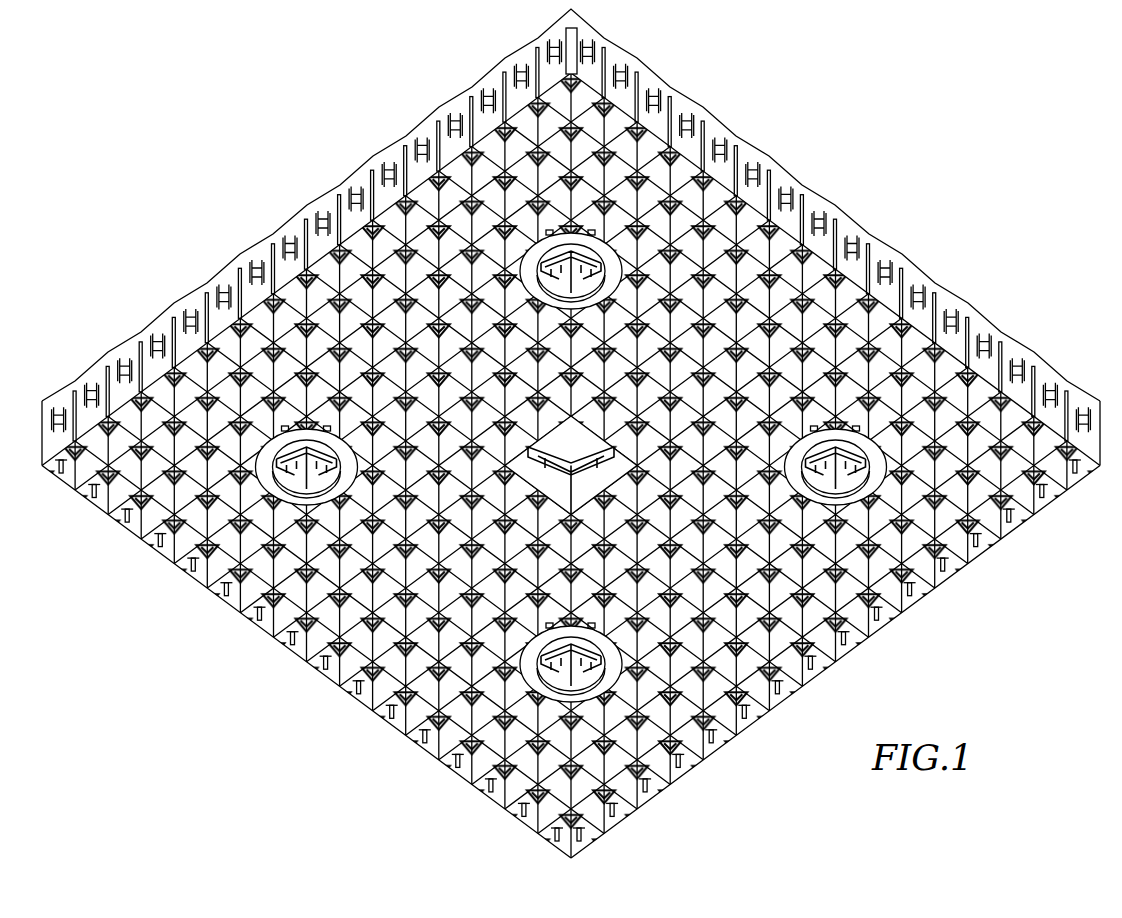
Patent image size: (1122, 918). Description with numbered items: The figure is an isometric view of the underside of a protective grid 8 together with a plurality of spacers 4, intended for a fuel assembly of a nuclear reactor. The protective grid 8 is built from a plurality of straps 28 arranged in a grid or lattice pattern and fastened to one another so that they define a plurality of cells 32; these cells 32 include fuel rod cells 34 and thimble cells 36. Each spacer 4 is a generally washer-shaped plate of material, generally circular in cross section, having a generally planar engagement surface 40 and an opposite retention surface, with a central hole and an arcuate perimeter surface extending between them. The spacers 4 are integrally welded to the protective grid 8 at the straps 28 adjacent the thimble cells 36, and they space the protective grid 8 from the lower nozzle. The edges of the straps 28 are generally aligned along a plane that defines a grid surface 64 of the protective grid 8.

The protective grid 8 is at (1030, 326).
The spacer 4 is at (620, 232).
The straps 28 is at (717, 212).
The engagement surface 40 is at (583, 250).
The thimble cells 36 is at (883, 462).
The fuel rod cells 34 is at (918, 597).
The cells 32 is at (877, 628).
The grid surface 64 is at (660, 730).